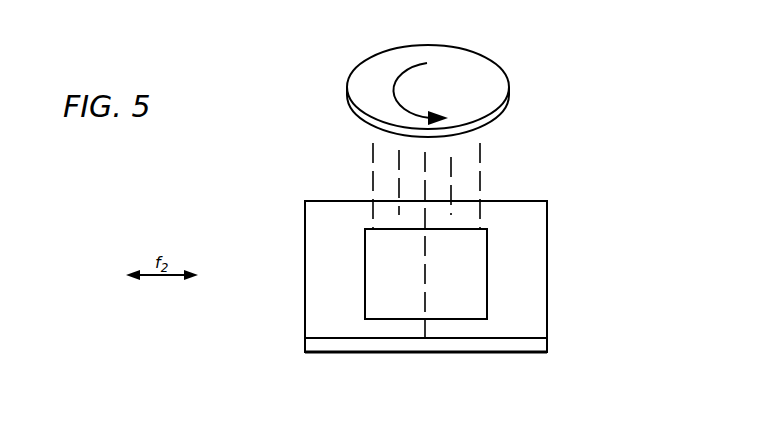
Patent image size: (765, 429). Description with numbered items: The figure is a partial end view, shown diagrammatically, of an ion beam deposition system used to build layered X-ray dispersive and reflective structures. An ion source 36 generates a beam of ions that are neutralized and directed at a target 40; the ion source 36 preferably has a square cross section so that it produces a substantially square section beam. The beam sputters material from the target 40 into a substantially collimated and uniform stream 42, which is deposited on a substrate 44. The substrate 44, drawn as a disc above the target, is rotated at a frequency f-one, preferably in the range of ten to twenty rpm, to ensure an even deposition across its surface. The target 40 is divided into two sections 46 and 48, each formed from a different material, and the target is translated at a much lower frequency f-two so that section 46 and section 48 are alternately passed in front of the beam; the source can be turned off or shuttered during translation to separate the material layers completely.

The ion source 36 is at (463, 310).
The target 40 is at (513, 355).
The stream 42 is at (466, 180).
The substrate 44 is at (494, 84).
The first target section 46 is at (345, 318).
The second target section 48 is at (528, 286).